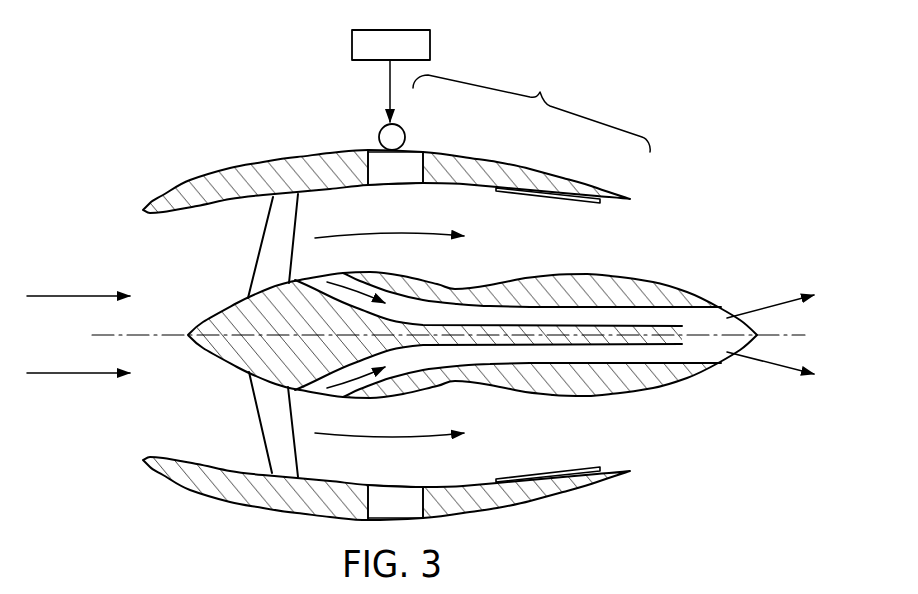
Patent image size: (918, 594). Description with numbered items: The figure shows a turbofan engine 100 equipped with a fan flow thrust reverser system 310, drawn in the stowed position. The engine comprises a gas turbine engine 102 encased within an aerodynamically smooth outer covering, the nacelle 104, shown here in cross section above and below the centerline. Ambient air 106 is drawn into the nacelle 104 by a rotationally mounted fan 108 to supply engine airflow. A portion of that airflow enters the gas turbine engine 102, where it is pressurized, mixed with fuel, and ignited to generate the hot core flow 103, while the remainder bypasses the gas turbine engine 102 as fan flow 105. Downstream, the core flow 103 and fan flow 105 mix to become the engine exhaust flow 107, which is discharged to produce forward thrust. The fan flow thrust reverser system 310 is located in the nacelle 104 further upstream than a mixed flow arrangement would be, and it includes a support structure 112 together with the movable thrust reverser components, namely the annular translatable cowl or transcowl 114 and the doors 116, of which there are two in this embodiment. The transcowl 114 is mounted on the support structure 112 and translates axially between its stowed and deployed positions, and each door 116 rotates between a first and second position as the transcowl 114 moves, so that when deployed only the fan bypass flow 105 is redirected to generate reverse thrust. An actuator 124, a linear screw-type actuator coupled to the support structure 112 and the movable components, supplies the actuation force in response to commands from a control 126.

The turbofan engine 100 is at (212, 110).
The gas turbine engine 102 is at (650, 280).
The core flow 103 is at (372, 299).
The nacelle 104 is at (185, 183).
The fan flow 105 is at (403, 232).
The ambient air 106 is at (95, 295).
The engine exhaust flow 107 is at (800, 290).
The fan 108 is at (282, 203).
The support structure 112 is at (370, 150).
The transcowl 114 is at (488, 162).
The door 116 is at (547, 198).
The actuator 124 is at (405, 138).
The control 126 is at (430, 43).
The fan flow thrust reverser system 310 is at (531, 108).